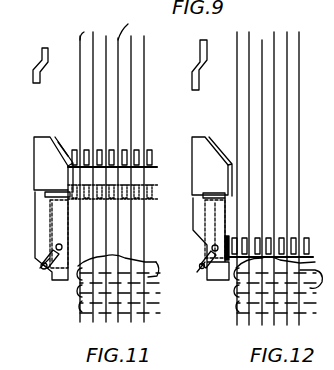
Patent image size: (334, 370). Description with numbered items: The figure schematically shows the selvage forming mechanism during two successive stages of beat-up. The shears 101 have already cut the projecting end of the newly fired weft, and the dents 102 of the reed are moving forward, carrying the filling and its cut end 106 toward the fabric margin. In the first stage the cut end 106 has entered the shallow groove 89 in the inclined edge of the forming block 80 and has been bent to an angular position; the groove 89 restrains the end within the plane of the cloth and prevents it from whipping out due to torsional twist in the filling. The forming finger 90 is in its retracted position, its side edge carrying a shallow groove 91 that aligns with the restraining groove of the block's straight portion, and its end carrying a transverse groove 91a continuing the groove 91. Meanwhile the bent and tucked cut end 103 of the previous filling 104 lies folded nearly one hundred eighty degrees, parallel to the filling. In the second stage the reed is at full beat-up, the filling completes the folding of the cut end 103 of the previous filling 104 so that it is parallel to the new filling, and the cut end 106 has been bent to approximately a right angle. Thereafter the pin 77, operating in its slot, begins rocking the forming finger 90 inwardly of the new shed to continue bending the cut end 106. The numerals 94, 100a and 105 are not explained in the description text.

In FIG. 11, the pin 77 is at (38, 268).
In FIG. 12, the pin 77 is at (197, 272).
In FIG. 11, the forming block 80 is at (35, 167).
In FIG. 12, the forming block 80 is at (192, 147).
In FIG. 11, the groove 89 is at (52, 136).
In FIG. 12, the groove 89 is at (220, 140).
In FIG. 11, the forming finger 90 is at (50, 206).
In FIG. 12, the forming finger 90 is at (205, 202).
In FIG. 11, the shallow groove 91 is at (160, 184).
In FIG. 12, the shallow groove 91 is at (203, 195).
In FIG. 11, the shallow groove 91a is at (45, 197).
In FIG. 11, the roller 94 is at (41, 266).
In FIG. 11, the support bar 100a is at (126, 168).
In FIG. 11, the shears 101 is at (44, 48).
In FIG. 12, the shears 101 is at (200, 50).
In FIG. 11, the dents 102 is at (150, 150).
In FIG. 12, the dents 102 is at (303, 238).
In FIG. 11, the cut end 103 is at (55, 248).
In FIG. 12, the cut end 103 is at (267, 257).
In FIG. 11, the previous filling 104 is at (150, 277).
In FIG. 12, the previous filling 104 is at (310, 288).
In FIG. 11, the warp wires 105 is at (93, 38).
In FIG. 12, the warp wires 105 is at (262, 40).
In FIG. 11, the cut end 106 is at (61, 150).
In FIG. 12, the cut end 106 is at (222, 238).